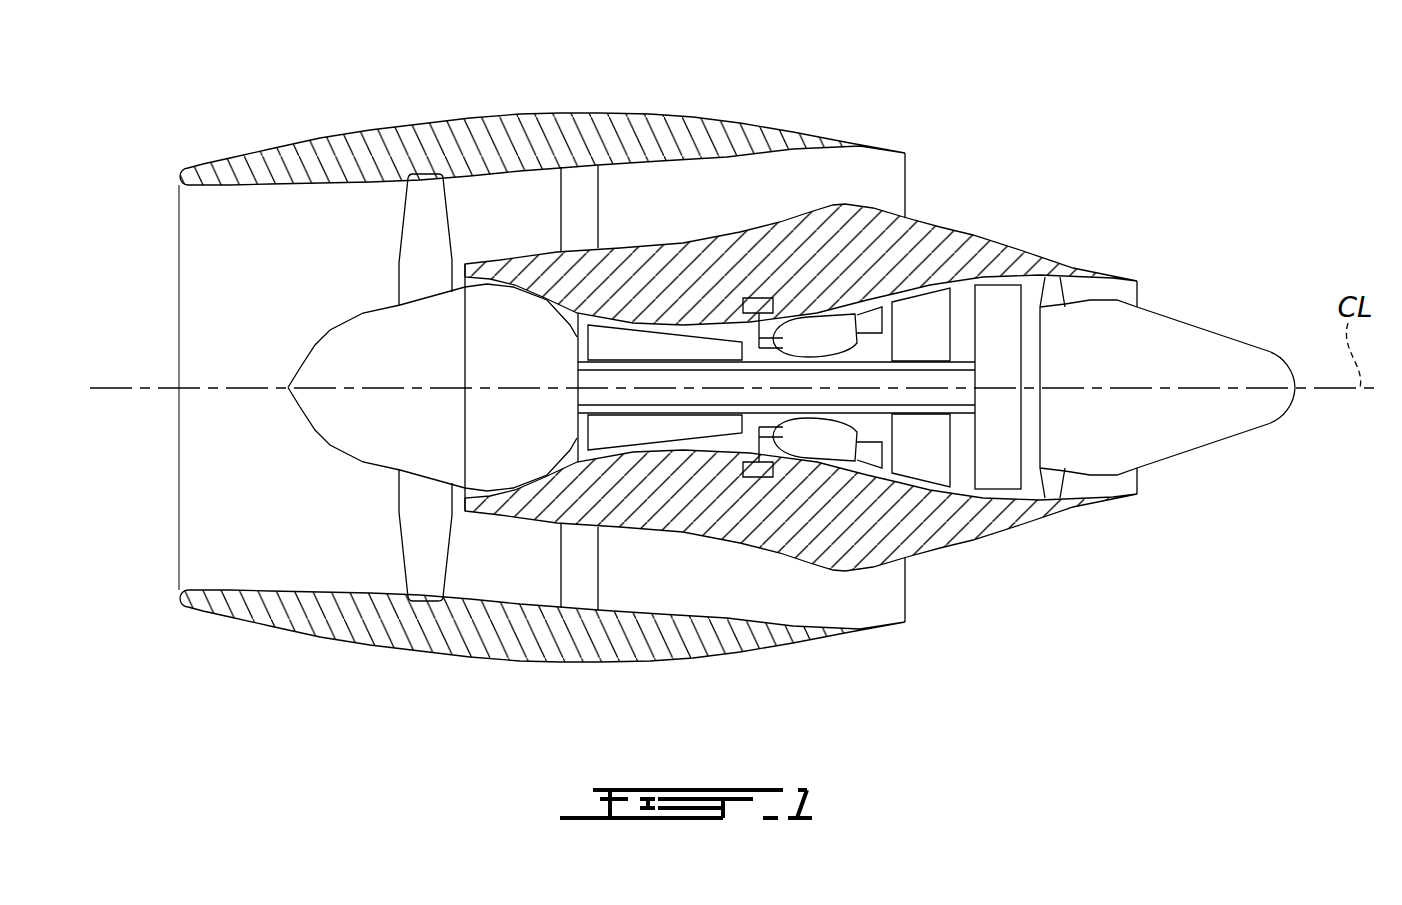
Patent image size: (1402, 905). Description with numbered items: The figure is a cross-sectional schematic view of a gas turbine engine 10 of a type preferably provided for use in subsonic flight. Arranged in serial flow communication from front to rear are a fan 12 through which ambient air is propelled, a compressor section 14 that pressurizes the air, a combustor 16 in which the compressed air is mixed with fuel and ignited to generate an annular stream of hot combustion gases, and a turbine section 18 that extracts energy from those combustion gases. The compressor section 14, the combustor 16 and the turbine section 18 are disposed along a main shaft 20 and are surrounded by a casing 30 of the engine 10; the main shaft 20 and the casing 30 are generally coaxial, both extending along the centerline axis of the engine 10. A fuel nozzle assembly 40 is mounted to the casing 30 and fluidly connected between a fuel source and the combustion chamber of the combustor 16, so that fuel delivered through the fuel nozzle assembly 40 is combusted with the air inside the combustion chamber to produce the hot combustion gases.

The gas turbine engine 10 is at (1068, 170).
The fan 12 is at (418, 526).
The compressor section 14 is at (662, 348).
The combustor 16 is at (822, 437).
The turbine section 18 is at (1026, 492).
The main shaft 20 is at (960, 364).
The casing 30 is at (846, 204).
The fuel nozzle assembly 40 is at (723, 478).